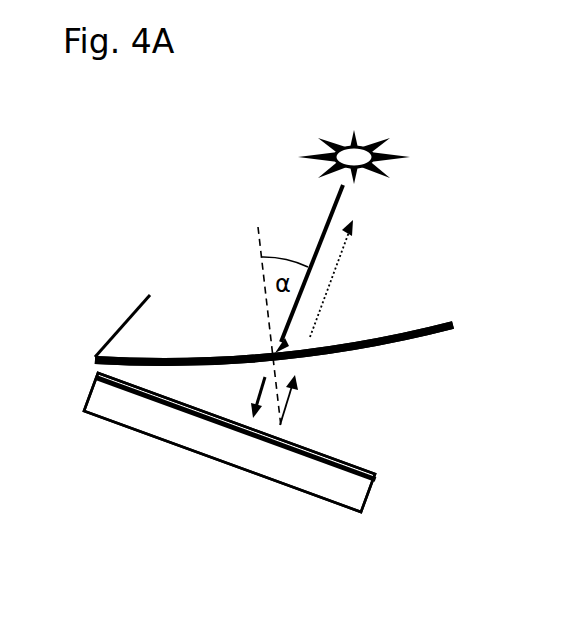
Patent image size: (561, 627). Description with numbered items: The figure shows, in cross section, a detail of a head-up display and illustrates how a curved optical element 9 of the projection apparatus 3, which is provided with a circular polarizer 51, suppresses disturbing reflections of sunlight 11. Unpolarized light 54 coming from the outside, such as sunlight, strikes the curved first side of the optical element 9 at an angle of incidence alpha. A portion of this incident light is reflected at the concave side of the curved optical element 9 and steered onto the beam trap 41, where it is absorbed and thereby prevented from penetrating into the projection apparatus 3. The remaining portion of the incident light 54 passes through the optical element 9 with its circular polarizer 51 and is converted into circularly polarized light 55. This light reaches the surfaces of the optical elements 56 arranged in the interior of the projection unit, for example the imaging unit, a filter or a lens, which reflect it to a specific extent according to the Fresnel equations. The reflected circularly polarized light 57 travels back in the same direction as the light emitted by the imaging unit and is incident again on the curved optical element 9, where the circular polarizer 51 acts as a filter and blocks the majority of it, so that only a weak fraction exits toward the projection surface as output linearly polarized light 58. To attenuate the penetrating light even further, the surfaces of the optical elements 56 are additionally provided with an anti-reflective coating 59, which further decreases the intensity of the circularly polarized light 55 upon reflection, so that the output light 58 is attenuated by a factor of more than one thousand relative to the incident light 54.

The projection apparatus 3 is at (289, 522).
The curved optical element 9 is at (437, 318).
The sunlight 11 is at (363, 139).
The beam trap 41 is at (138, 305).
The circular polarizer 51 is at (425, 365).
The unpolarized light 54 is at (332, 205).
The circularly polarized light 55 is at (262, 394).
The optical elements 56 is at (370, 496).
The reflected circularly polarized light 57 is at (288, 406).
The output linearly polarized light 58 is at (328, 292).
The anti-reflective coating 59 is at (343, 460).